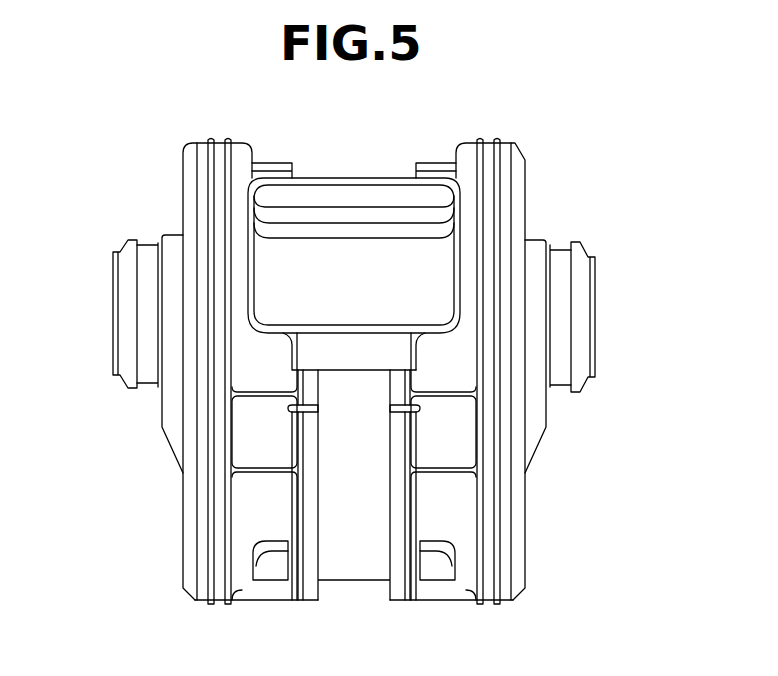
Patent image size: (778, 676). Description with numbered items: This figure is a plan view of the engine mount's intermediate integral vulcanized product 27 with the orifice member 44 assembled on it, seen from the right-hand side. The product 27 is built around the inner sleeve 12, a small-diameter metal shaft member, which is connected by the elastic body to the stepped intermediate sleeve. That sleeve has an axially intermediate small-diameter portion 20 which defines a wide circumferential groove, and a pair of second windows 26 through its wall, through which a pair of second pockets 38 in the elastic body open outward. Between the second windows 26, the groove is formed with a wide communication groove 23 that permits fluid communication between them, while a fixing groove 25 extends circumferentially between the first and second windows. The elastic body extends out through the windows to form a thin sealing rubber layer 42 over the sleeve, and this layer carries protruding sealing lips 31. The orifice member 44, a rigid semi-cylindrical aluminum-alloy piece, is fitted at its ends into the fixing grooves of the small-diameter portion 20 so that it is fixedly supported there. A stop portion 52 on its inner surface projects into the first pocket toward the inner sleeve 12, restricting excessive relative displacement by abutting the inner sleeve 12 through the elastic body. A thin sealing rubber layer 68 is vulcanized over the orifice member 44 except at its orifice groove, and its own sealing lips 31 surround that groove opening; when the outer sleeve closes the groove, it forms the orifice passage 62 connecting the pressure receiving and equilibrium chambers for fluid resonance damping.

The inner sleeve 12 is at (112, 290).
The small-diameter portion 20 is at (344, 390).
The communication groove 23 is at (350, 180).
The fixing groove 25 is at (297, 497).
The second windows 26 is at (414, 383).
The intermediate integral vulcanized product 27 is at (496, 123).
The sealing lips 31 is at (480, 222).
The second pockets 38 is at (258, 276).
The sealing rubber layer 42 is at (503, 495).
The orifice member 44 is at (367, 595).
The stop portion 52 is at (273, 570).
The orifice passage 62 is at (453, 452).
The sealing rubber layer 68 is at (430, 600).